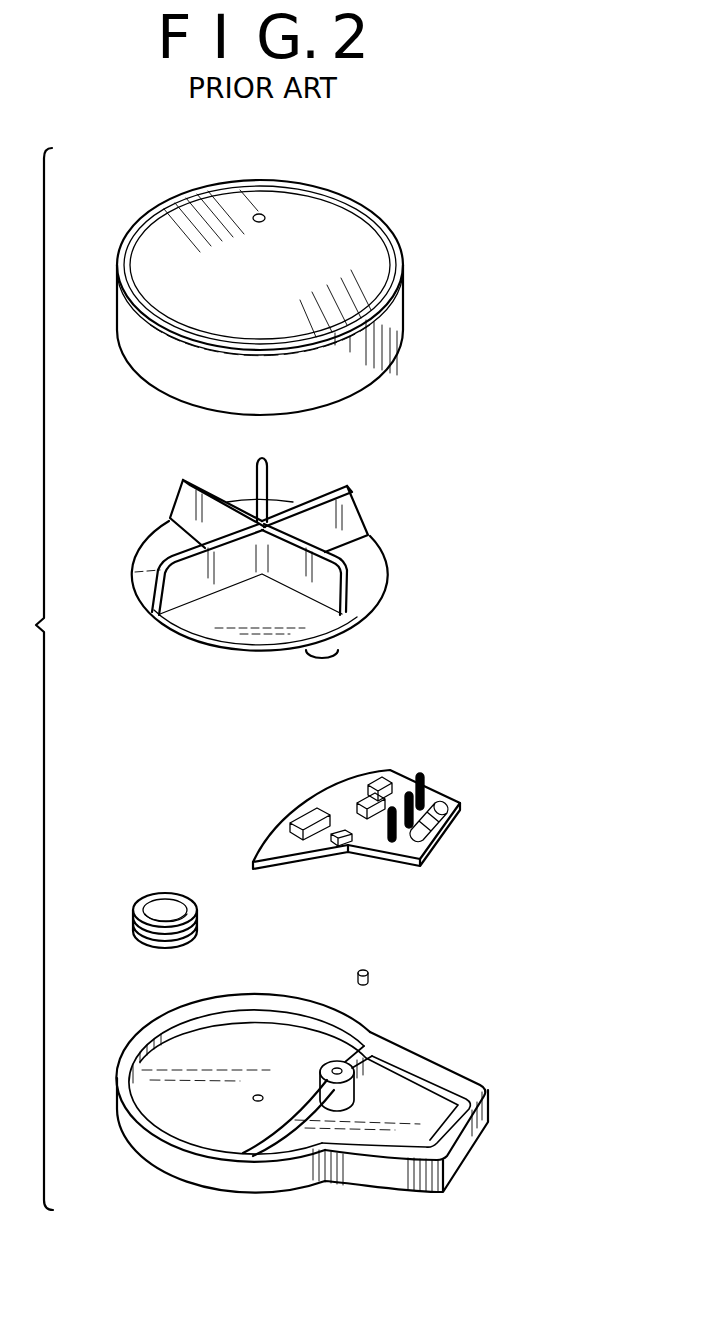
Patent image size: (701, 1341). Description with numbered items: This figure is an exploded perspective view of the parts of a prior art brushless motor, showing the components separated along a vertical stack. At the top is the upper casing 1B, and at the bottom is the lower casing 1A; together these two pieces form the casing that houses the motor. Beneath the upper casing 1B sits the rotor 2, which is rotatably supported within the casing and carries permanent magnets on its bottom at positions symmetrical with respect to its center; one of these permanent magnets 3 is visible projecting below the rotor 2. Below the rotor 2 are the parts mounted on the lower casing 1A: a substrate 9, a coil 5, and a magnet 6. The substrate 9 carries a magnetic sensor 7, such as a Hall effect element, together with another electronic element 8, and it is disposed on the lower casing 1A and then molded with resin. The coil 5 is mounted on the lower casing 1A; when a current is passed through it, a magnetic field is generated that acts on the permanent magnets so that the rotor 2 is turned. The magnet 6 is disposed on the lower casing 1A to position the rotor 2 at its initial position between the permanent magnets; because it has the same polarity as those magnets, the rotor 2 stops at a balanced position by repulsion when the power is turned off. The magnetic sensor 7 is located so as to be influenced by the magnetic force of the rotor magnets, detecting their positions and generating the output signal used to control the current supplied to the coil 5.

The lower casing 1A is at (467, 1150).
The upper casing 1B is at (367, 236).
The rotor 2 is at (372, 562).
The permanent magnet 3 is at (327, 652).
The coil 5 is at (145, 900).
The magnet 6 is at (370, 971).
The magnetic sensor 7 is at (307, 808).
The electronic element 8 is at (360, 795).
The substrate 9 is at (420, 863).